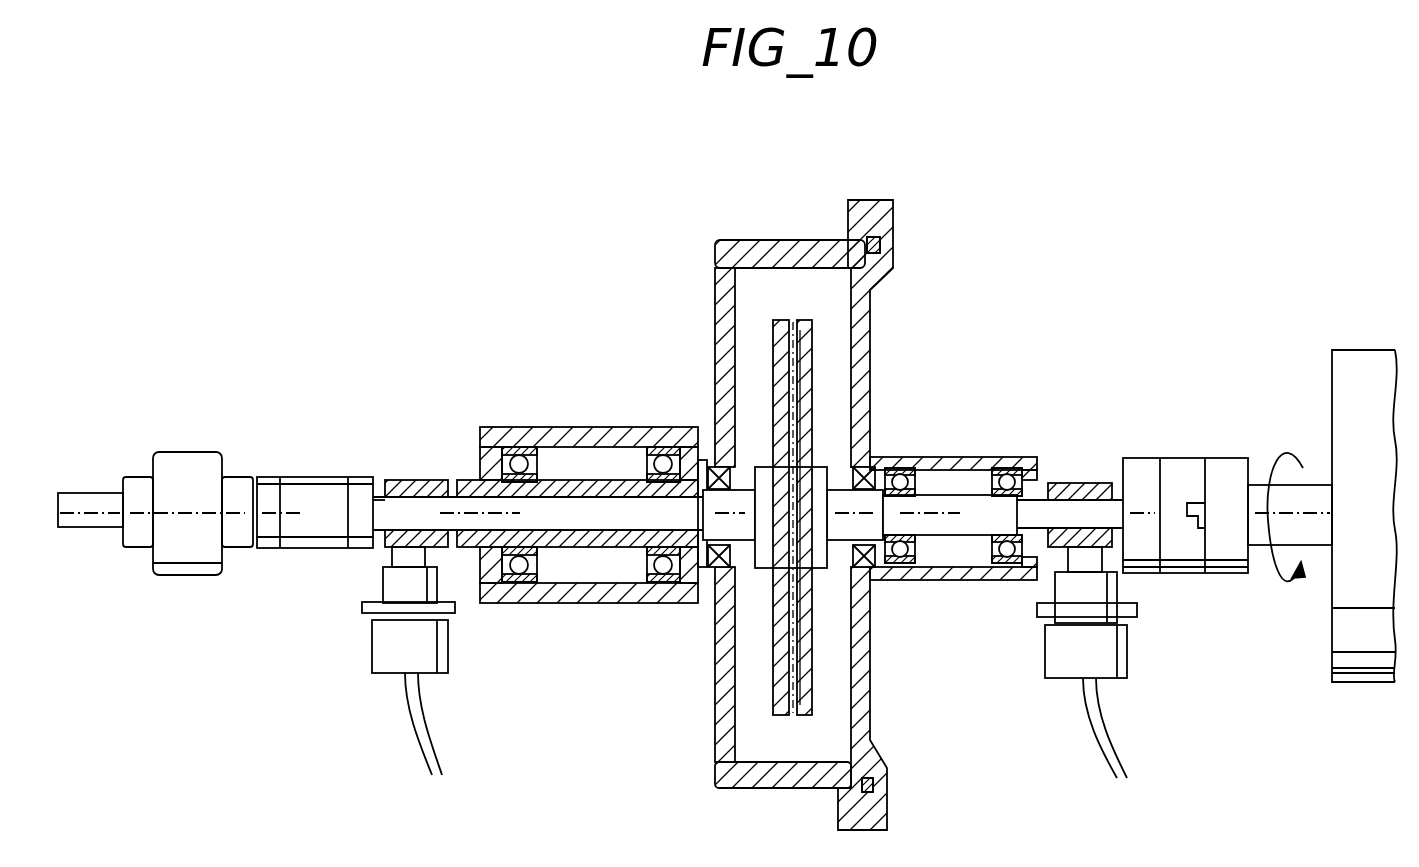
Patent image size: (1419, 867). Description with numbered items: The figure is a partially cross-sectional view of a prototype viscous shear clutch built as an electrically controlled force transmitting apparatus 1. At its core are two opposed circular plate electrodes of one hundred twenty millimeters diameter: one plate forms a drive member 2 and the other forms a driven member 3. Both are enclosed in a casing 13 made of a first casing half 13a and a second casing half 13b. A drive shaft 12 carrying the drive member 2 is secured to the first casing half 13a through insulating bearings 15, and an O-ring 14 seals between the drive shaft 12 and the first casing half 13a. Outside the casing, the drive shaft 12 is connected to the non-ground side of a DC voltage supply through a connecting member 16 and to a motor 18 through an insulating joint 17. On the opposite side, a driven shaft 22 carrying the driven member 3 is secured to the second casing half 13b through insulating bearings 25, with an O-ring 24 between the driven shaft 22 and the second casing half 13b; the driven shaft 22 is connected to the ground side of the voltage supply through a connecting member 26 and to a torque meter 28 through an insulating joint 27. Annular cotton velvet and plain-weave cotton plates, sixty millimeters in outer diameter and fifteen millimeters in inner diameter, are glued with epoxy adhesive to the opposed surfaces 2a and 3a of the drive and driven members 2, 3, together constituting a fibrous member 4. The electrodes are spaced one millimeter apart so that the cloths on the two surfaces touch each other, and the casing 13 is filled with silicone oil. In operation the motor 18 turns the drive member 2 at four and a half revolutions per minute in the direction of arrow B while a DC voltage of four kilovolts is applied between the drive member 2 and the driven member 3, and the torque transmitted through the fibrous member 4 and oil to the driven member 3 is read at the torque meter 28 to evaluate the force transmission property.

The electrically controlled force transmitting apparatus 1 is at (937, 221).
The drive member 2 is at (779, 460).
The opposed surface of the drive member 2a is at (802, 617).
The driven member 3 is at (767, 675).
The opposed surface of the driven member 3a is at (772, 645).
The fibrous member 4 is at (795, 320).
The drive shaft 12 is at (958, 532).
The casing 13 is at (806, 515).
The first casing half 13a is at (872, 323).
The second casing half 13b is at (722, 298).
The O-ring 14 is at (845, 467).
The insulating bearings 15 is at (924, 466).
The connecting member 16 is at (1087, 483).
The insulating joint 17 is at (1185, 573).
The motor 18 is at (1370, 675).
The driven shaft 22 is at (595, 520).
The O-ring 24 is at (748, 470).
The insulating bearings 25 is at (522, 448).
The connecting member 26 is at (420, 480).
The insulating joint 27 is at (303, 548).
The torque meter 28 is at (190, 575).
The arrow indicating direction of rotation B is at (1286, 540).